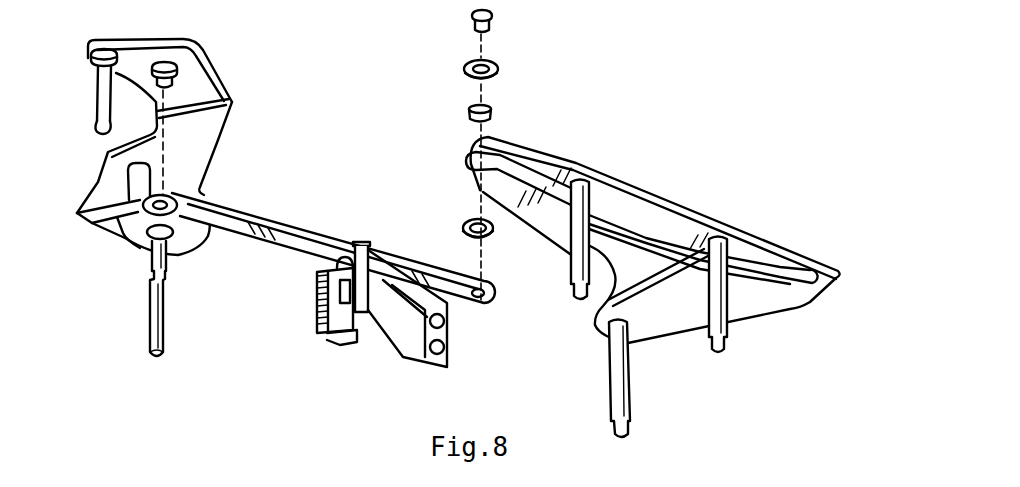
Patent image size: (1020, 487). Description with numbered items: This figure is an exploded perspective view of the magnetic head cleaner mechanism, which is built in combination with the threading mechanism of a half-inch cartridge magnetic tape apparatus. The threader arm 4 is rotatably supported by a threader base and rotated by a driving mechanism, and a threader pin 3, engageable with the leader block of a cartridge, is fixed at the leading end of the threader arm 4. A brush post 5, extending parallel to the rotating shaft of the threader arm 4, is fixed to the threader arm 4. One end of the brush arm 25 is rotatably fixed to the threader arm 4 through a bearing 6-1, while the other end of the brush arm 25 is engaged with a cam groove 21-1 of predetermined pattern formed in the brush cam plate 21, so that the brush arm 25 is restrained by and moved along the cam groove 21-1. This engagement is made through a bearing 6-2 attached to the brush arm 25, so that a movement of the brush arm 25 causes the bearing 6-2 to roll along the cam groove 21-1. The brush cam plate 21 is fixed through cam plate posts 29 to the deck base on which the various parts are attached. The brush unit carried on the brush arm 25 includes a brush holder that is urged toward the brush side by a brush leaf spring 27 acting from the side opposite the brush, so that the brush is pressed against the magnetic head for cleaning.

The threader pin 3 is at (95, 98).
The threader arm 4 is at (203, 125).
The brush post 5 is at (183, 70).
The bearing 6-1 is at (123, 235).
The bearing 6-2 is at (492, 113).
The brush cam plate 21 is at (650, 213).
The cam groove 21-1 is at (810, 255).
The brush arm 25 is at (318, 240).
The brush leaf spring 27 is at (380, 327).
The cam plate post 29 is at (571, 254).